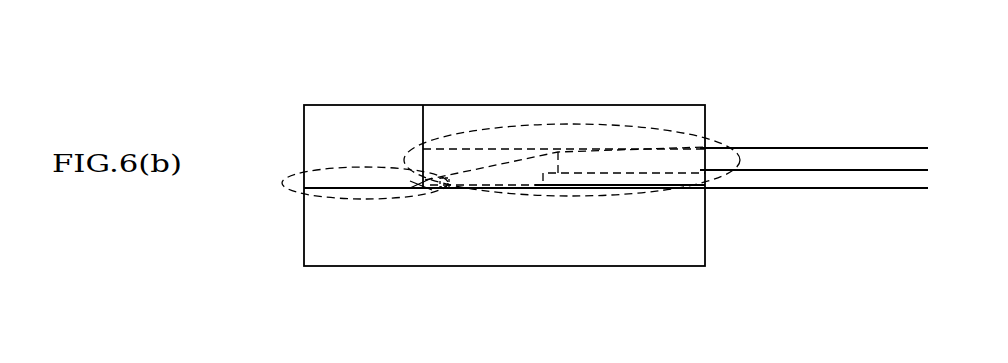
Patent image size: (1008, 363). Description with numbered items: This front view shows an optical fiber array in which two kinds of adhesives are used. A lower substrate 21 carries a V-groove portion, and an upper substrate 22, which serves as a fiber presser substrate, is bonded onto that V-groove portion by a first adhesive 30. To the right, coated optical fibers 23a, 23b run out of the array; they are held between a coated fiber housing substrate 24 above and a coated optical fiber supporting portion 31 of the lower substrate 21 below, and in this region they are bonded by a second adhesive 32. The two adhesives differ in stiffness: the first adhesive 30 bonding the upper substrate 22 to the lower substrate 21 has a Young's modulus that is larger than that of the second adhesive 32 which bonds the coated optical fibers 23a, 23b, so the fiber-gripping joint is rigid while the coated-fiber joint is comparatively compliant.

The lower substrate 21 is at (320, 245).
The upper substrate (fiber presser substrate) 22 is at (318, 135).
The coated optical fiber 23a is at (793, 157).
The coated optical fiber 23b is at (800, 178).
The coated fiber housing substrate 24 is at (687, 115).
The first adhesive 30 is at (372, 167).
The coated optical fiber supporting portion 31 is at (502, 190).
The second adhesive 32 is at (596, 138).